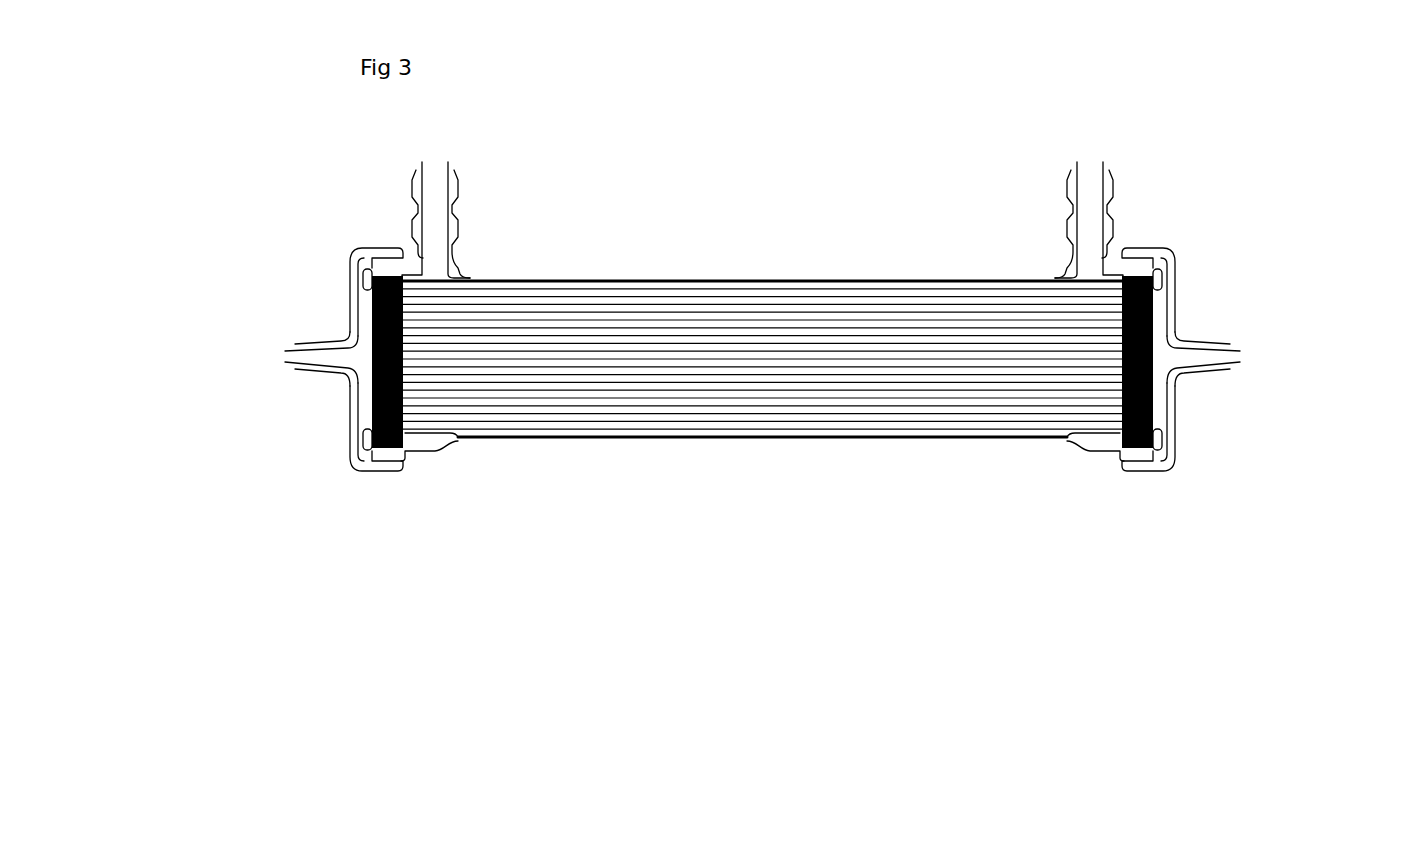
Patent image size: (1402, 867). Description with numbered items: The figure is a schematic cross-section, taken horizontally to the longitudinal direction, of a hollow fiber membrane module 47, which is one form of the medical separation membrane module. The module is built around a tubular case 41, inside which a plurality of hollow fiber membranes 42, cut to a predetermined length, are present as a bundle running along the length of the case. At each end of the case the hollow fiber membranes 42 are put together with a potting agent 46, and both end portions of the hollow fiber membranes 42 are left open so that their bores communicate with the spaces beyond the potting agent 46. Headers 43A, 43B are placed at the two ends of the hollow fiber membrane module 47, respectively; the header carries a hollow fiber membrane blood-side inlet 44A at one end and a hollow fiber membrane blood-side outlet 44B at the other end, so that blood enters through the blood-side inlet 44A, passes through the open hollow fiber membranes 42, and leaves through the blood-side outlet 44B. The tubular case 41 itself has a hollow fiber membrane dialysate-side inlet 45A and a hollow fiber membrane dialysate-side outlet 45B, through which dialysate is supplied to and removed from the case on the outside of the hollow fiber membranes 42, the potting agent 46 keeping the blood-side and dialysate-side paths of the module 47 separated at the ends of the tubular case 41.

The tubular case 41 is at (779, 438).
The hollow fiber membranes 42 is at (623, 388).
The header 43A is at (360, 259).
The header 43B is at (1157, 259).
The hollow fiber membrane blood-side inlet 44A is at (292, 358).
The hollow fiber membrane blood-side outlet 44B is at (1236, 359).
The hollow fiber membrane dialysate-side inlet 45A is at (1088, 224).
The hollow fiber membrane dialysate-side outlet 45B is at (433, 222).
The potting agent 46 is at (372, 396).
The hollow fiber membrane module 47 is at (793, 270).